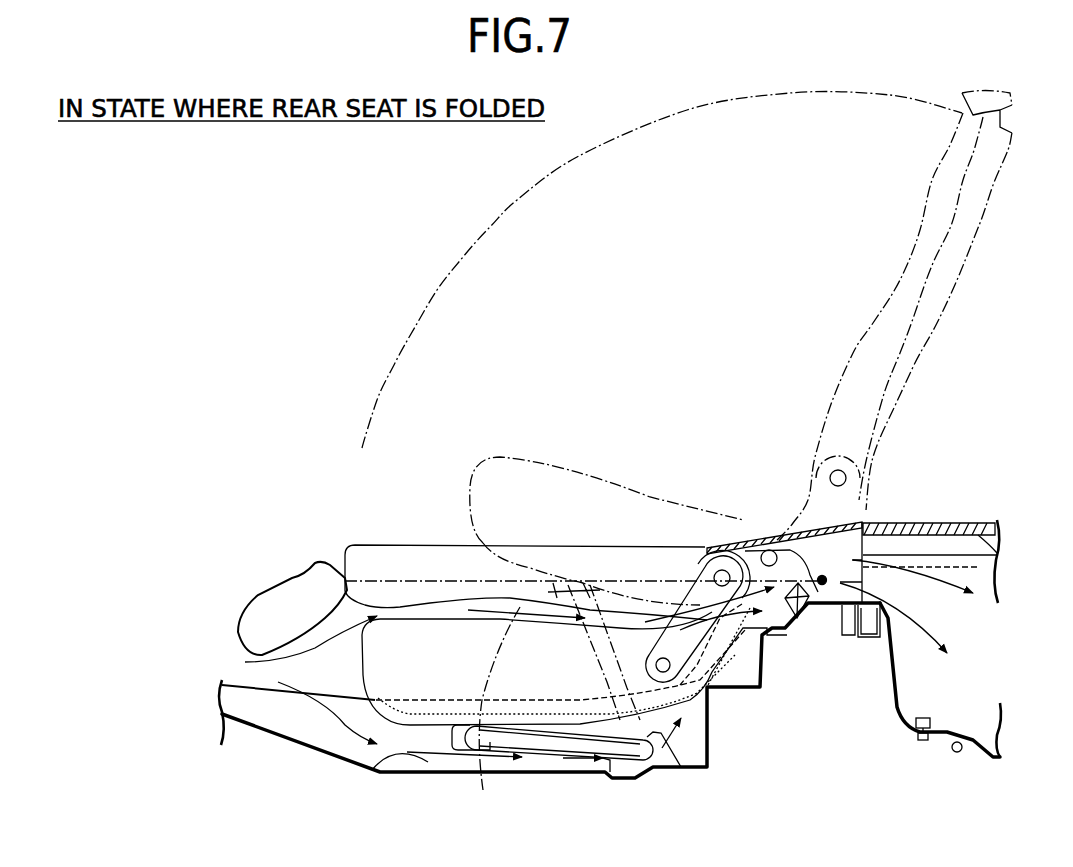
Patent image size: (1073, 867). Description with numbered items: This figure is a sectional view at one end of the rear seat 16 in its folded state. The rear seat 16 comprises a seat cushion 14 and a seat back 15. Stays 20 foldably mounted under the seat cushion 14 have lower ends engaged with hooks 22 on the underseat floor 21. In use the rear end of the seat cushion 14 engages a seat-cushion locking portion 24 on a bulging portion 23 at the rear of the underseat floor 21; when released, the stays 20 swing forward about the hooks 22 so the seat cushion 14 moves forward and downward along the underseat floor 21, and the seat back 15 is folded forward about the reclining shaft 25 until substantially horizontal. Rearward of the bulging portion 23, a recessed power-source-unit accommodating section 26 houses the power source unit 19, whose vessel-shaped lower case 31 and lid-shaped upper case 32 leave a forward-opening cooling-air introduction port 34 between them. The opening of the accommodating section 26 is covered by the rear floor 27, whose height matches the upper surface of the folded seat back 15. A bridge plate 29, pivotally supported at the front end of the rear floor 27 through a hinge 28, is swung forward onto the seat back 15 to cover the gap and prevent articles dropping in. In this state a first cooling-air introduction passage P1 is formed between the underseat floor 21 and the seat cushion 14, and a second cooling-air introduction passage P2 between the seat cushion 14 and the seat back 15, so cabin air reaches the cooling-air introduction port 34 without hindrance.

The seat cushion 14 is at (485, 640).
The seat back 15 is at (390, 553).
The rear seat 16 is at (387, 456).
The power source unit 19 is at (952, 740).
The stay 20 is at (530, 733).
The underseat floor 21 is at (375, 766).
The hook 22 is at (687, 742).
The bulging portion 23 is at (820, 607).
The seat-cushion locking portion 24 is at (796, 618).
The reclining shaft 25 is at (710, 577).
The power-source-unit accommodating section 26 is at (958, 753).
The rear floor 27 is at (940, 523).
The hinge 28 is at (863, 522).
The bridge plate 29 is at (748, 533).
The lower case 31 is at (903, 683).
The upper case 32 is at (998, 553).
The cooling-air introduction port 34 is at (863, 637).
The first cooling-air introduction passage P1 is at (550, 760).
The second cooling-air introduction passage P2 is at (519, 607).